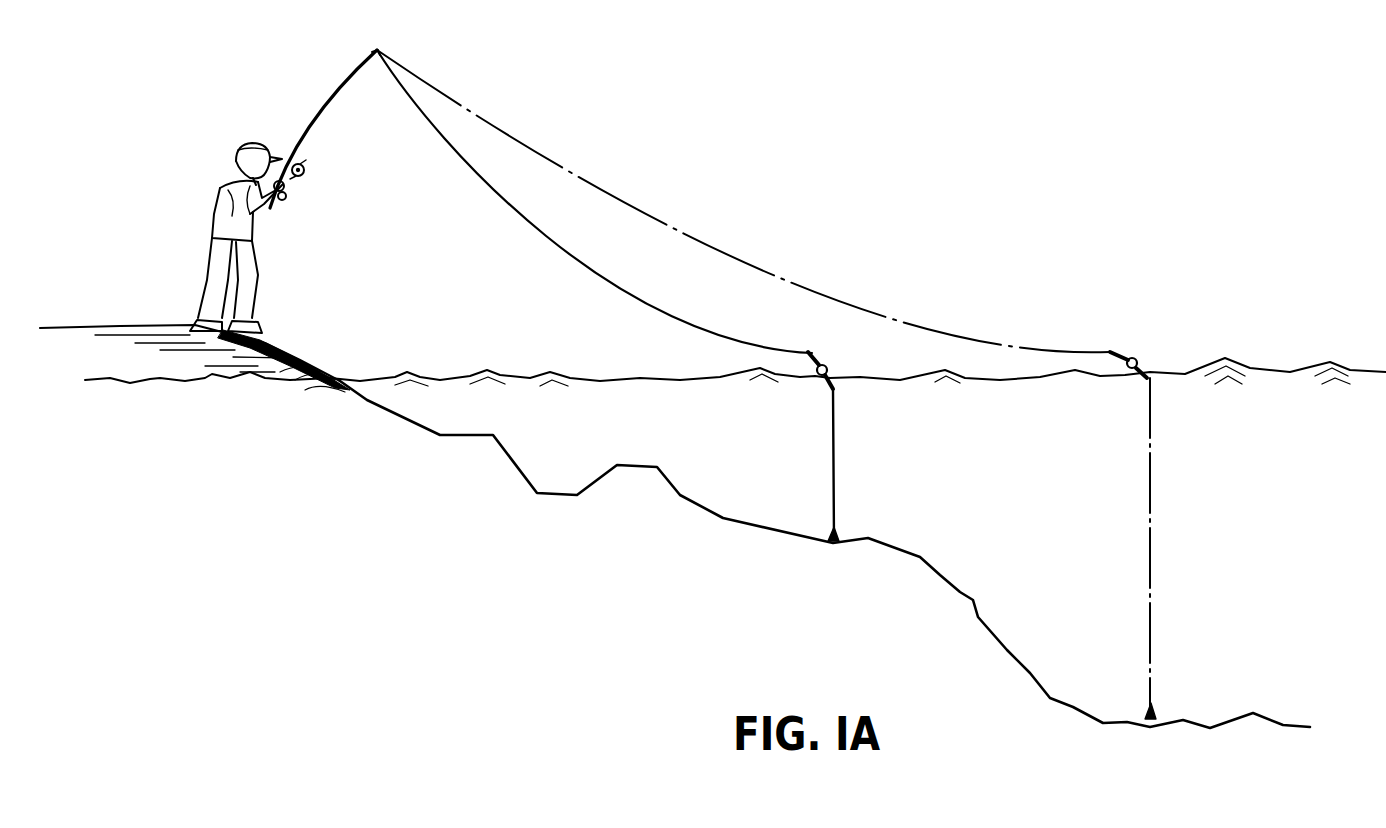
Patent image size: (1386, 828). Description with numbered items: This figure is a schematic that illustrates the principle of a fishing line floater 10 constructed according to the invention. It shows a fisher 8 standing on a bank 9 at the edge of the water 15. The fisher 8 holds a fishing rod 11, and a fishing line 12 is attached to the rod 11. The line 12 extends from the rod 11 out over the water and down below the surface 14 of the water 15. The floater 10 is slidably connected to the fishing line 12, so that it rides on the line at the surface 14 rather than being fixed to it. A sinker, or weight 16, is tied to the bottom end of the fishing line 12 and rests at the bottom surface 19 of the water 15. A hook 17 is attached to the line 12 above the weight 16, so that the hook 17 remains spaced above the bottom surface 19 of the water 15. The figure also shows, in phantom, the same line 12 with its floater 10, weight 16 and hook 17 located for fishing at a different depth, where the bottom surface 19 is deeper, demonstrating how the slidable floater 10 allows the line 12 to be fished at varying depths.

The fisher 8 is at (223, 171).
The bank 9 is at (116, 321).
The fishing line floater 10 is at (824, 356).
The fishing rod 11 is at (323, 108).
The fishing line 12 is at (676, 236).
The surface 14 is at (512, 373).
The water 15 is at (660, 425).
The weight 16 is at (841, 539).
The hook 17 is at (832, 474).
The bottom surface 19 is at (962, 590).